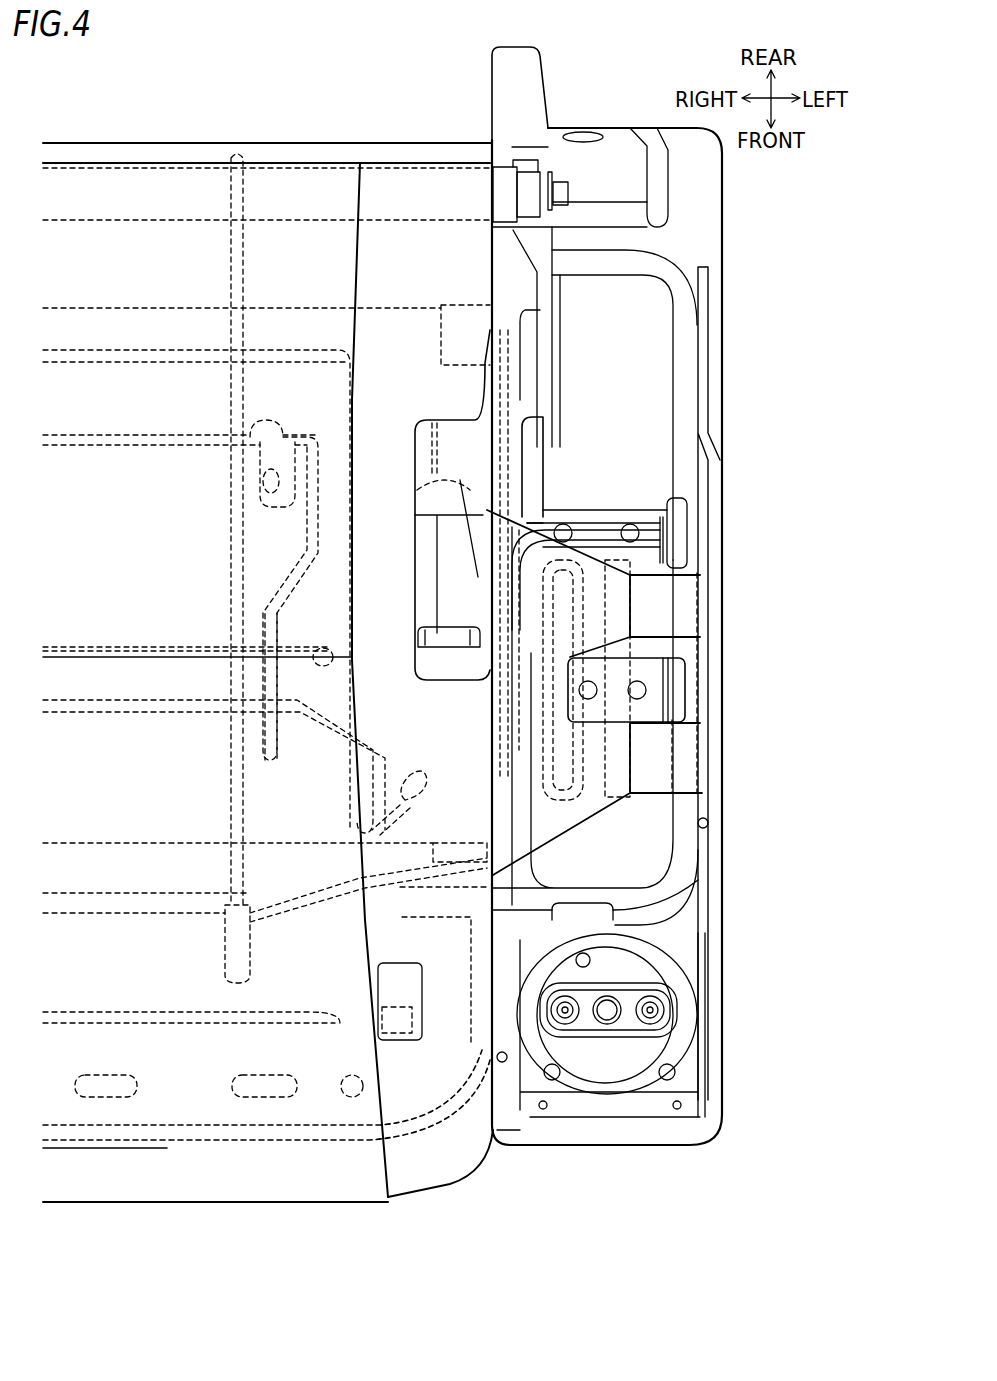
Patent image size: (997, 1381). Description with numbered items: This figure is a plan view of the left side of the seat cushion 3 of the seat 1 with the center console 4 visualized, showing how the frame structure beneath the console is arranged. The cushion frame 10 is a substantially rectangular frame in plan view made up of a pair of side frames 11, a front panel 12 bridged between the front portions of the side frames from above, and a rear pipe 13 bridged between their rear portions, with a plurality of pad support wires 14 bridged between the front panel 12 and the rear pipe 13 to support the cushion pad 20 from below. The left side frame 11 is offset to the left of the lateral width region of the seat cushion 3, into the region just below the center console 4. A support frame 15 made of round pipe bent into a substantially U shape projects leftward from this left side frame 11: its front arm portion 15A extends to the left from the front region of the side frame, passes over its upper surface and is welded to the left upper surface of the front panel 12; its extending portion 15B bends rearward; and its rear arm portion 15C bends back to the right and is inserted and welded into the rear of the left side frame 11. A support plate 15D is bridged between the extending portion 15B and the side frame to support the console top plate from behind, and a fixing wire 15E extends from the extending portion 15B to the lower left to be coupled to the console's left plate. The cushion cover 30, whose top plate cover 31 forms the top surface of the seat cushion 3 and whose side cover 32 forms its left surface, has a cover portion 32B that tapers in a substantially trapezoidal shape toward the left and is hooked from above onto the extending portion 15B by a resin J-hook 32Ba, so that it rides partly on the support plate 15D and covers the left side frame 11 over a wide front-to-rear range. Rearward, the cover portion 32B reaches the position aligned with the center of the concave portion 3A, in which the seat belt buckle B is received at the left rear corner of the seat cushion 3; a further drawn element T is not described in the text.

The seat 1 is at (520, 1200).
The seat cushion 3 is at (422, 1193).
The concave portion 3A is at (457, 657).
The center console 4 is at (687, 1155).
The cushion frame 10 is at (207, 1095).
The side frame 11 is at (532, 447).
The front panel 12 is at (160, 1090).
The rear pipe 13 is at (297, 193).
The pad support wire 14 is at (200, 445).
The support frame 15 is at (697, 871).
The front arm portion 15A is at (653, 897).
The extending portion 15B is at (690, 840).
The rear arm portion 15C is at (612, 260).
The support plate 15D is at (623, 672).
The fixing wire 15E is at (771, 780).
The cushion pad 20 is at (263, 1173).
The cushion cover 30 is at (305, 1177).
The top plate cover 31 is at (105, 1114).
The side cover 32 is at (590, 800).
The cover portion 32B is at (657, 686).
The J-hook 32Ba is at (658, 605).
The seat belt buckle B is at (457, 562).
The tether T is at (500, 710).